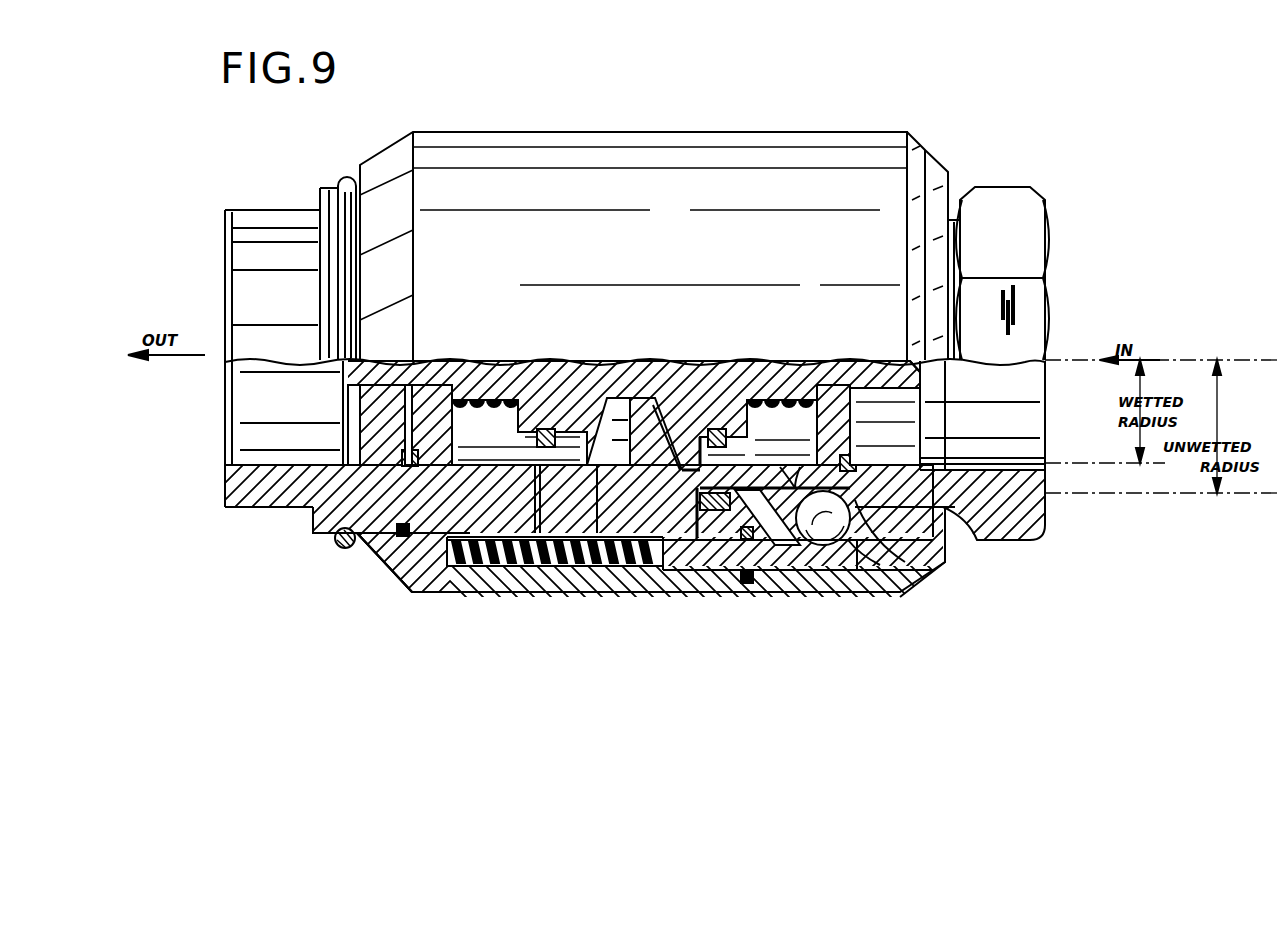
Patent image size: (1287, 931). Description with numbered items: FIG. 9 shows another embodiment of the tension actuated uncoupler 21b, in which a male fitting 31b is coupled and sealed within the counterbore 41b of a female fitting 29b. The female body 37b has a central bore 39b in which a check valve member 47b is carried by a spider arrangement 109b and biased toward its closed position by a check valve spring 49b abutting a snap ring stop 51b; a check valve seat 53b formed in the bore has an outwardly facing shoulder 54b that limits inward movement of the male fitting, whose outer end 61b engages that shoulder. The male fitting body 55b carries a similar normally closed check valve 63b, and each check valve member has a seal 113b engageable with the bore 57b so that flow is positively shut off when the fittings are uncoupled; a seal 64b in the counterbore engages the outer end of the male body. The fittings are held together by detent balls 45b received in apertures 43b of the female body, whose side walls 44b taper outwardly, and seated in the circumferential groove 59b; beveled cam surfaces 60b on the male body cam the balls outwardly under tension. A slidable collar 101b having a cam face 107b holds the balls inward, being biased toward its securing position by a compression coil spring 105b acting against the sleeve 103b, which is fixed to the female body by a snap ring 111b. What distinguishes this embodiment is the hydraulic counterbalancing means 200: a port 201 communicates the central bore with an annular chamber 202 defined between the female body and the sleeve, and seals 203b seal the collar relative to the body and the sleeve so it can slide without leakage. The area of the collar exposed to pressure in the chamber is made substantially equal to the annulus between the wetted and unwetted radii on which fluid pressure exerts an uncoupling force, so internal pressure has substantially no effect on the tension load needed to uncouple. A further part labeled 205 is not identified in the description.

The uncoupler 21b is at (706, 120).
The sleeve 103b is at (582, 186).
The snap ring 111b is at (345, 180).
The female fitting 29b is at (312, 522).
The central bore 39b is at (385, 462).
The spider arrangement 109b is at (435, 385).
The check valve member 47b is at (524, 380).
The check valve spring 49b is at (458, 400).
The snap ring stop 51b is at (868, 453).
The outer end 61b is at (612, 395).
The check valve 63b is at (705, 390).
The detent balls 45b is at (759, 442).
The beveled cam surfaces 60b is at (858, 416).
The circumferential groove 59b is at (922, 461).
The bore 57b is at (1035, 470).
The male fitting 31b is at (1015, 520).
The male fitting body 55b is at (965, 540).
The side walls 44b is at (927, 512).
The apertures 43b is at (925, 568).
The cam face 107b is at (902, 596).
The seals 203b is at (805, 542).
The counterbore 41b is at (715, 580).
The seal 64b is at (735, 510).
The slidable collar 101b is at (660, 570).
The shoulder 54b is at (690, 565).
The check valve seat 53b is at (597, 520).
The compression coil spring 105b is at (575, 575).
The hydraulic counterbalancing means 200 is at (632, 570).
The port 201 is at (522, 560).
The annular chamber 202 is at (545, 565).
The chamfer 205 is at (370, 555).
The female body 37b is at (412, 592).
The seal 113b is at (490, 560).